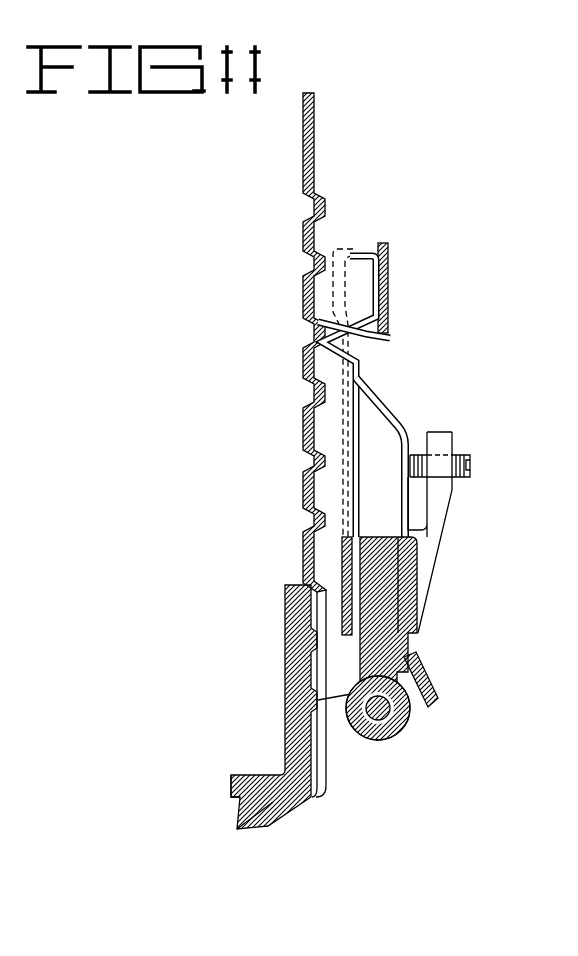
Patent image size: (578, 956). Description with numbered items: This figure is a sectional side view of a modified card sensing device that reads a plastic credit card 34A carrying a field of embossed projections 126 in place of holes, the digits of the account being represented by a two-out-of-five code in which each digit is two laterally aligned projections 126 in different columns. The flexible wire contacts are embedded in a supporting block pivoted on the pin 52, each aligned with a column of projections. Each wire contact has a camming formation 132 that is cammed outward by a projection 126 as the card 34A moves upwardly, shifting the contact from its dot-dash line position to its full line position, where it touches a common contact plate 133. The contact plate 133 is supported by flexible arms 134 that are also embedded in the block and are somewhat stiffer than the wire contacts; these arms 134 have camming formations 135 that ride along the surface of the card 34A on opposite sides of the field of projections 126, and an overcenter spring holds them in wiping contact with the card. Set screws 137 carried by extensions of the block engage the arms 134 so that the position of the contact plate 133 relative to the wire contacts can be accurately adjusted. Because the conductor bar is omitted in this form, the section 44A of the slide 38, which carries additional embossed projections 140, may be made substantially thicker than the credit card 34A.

The plastic credit card 34A is at (316, 128).
The section of the slide 44A is at (405, 661).
The slide 38 is at (238, 795).
The common contact plate 133 is at (389, 295).
The camming formation 132 is at (322, 320).
The embossed projections 126 is at (323, 398).
The flexible arms 134 is at (390, 340).
The camming formations 135 is at (318, 368).
The set screws 137 is at (470, 460).
The pin 52 is at (392, 714).
The additional embossed projections 140 is at (430, 700).